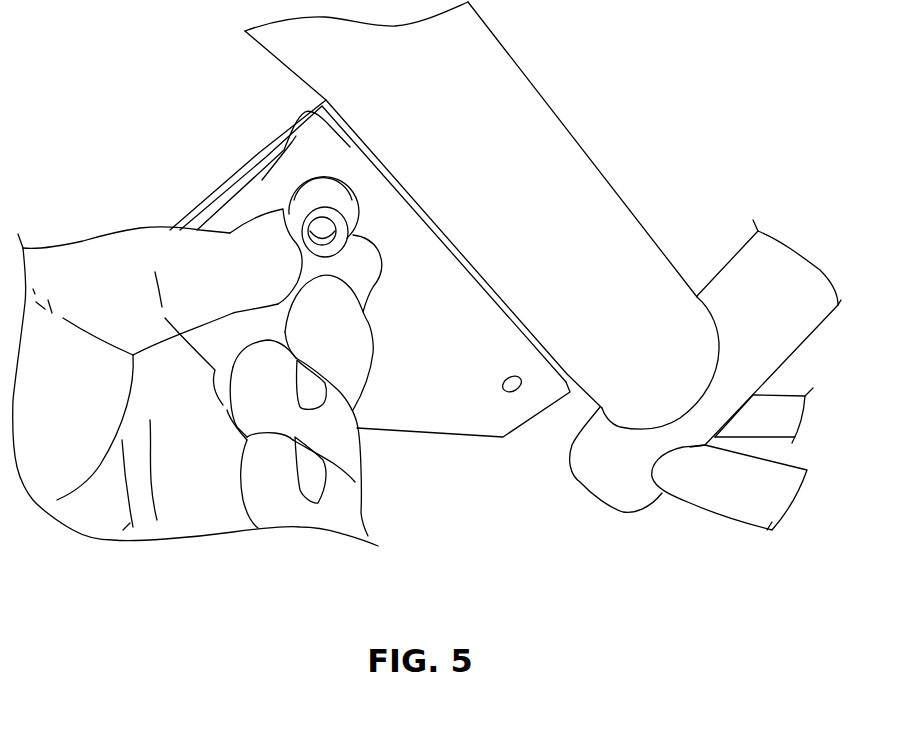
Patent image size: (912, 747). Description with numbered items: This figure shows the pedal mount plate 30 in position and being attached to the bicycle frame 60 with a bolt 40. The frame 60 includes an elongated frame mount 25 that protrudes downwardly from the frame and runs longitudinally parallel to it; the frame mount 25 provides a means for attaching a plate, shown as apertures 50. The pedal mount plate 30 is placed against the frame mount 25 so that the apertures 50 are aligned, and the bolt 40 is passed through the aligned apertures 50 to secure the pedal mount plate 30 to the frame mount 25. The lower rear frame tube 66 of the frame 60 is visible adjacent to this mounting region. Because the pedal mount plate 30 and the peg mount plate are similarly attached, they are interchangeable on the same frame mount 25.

The frame mount 25 is at (297, 118).
The pedal mount plate 30 is at (418, 343).
The bolt 40 is at (313, 200).
The apertures 50 is at (504, 398).
The frame 60 is at (498, 156).
The lower rear frame tube 66 is at (764, 333).